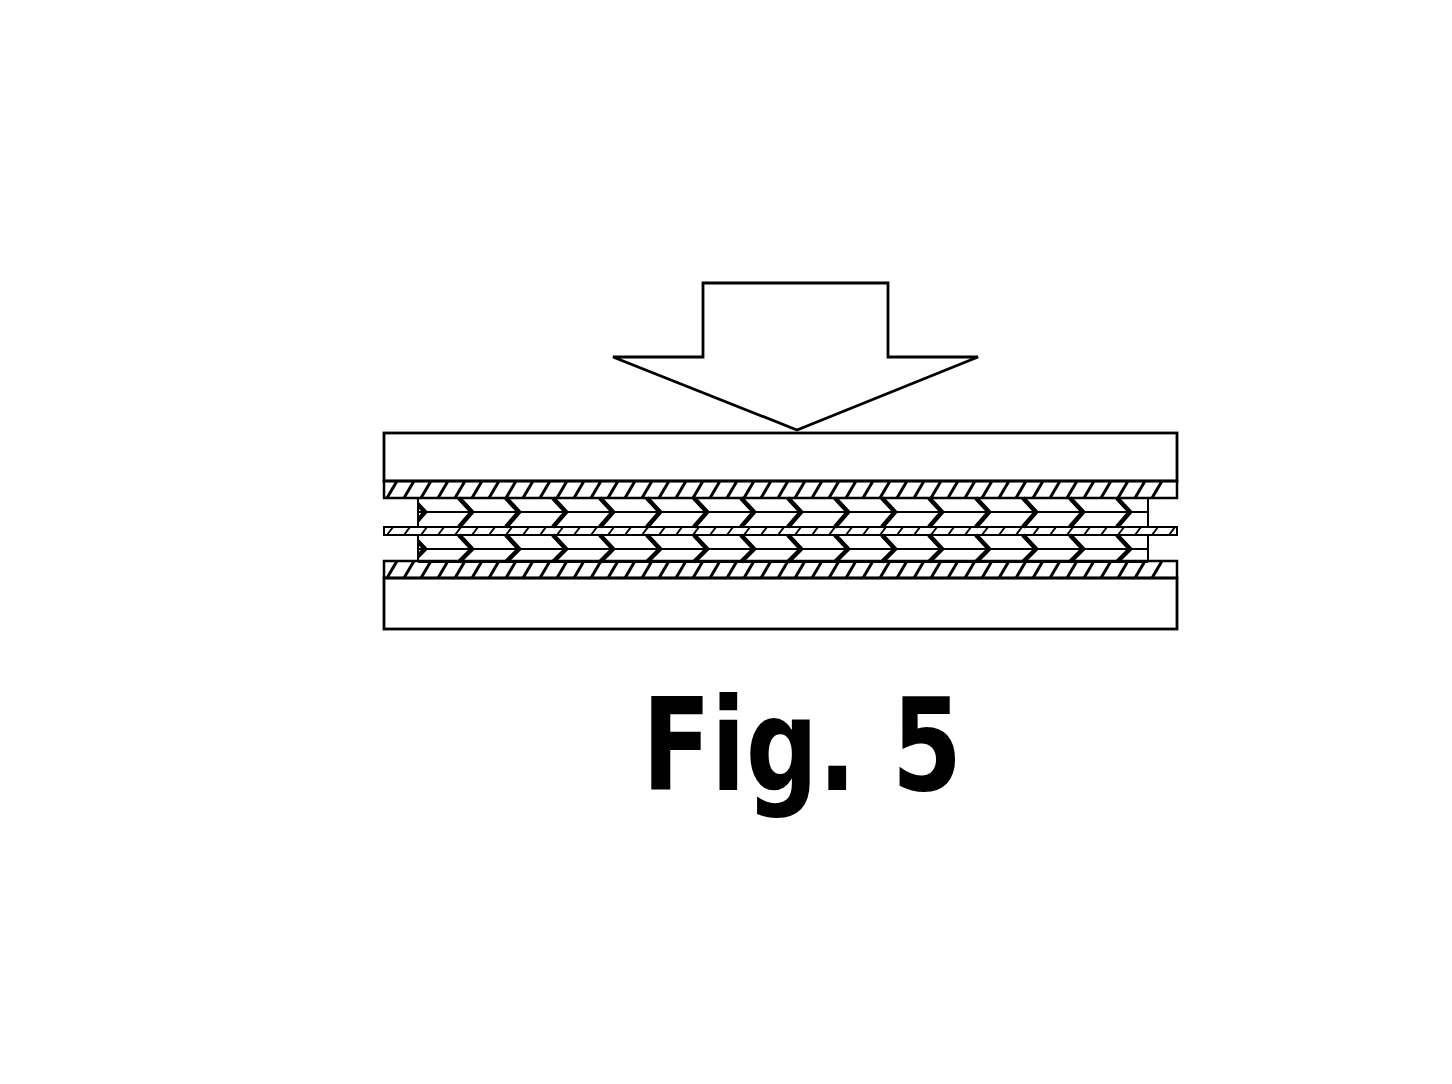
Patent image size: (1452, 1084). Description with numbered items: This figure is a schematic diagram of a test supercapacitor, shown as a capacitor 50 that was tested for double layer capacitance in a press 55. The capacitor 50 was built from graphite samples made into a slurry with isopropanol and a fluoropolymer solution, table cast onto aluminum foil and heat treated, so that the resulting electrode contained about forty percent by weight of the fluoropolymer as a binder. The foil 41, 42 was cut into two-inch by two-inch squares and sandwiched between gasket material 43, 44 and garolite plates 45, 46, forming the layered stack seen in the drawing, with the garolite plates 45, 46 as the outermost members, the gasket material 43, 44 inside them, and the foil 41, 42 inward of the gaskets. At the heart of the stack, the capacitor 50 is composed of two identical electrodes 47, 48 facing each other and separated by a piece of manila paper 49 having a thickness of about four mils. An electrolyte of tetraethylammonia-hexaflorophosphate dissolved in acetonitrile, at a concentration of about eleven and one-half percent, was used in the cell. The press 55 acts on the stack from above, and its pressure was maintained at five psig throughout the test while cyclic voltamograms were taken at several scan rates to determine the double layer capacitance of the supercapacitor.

The foil 41 is at (415, 503).
The foil 42 is at (415, 552).
The gasket material 43 is at (384, 498).
The gasket material 44 is at (383, 567).
The garolite plate 45 is at (1177, 450).
The garolite plate 46 is at (1177, 598).
The electrode 47 is at (1148, 504).
The electrode 48 is at (1148, 539).
The manila paper 49 is at (1178, 522).
The capacitor 50 is at (1098, 311).
The press 55 is at (888, 298).